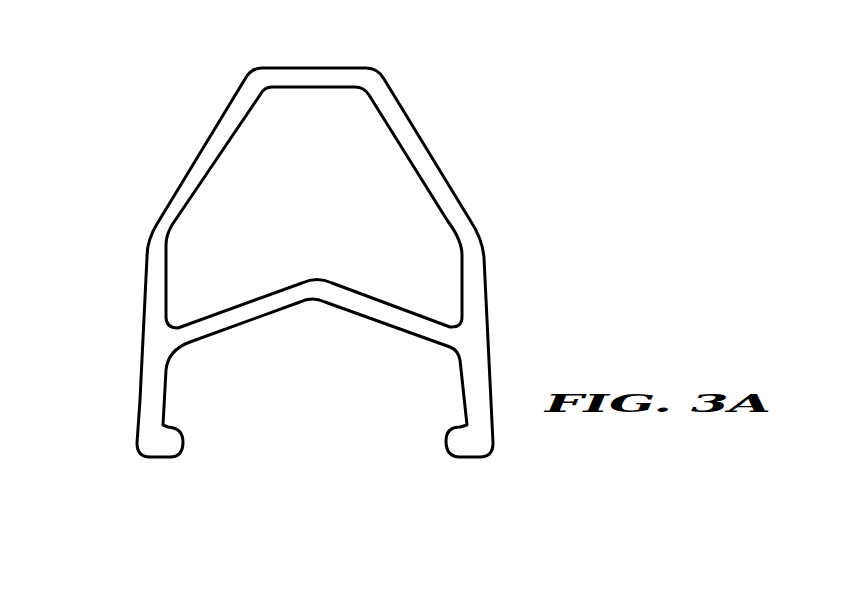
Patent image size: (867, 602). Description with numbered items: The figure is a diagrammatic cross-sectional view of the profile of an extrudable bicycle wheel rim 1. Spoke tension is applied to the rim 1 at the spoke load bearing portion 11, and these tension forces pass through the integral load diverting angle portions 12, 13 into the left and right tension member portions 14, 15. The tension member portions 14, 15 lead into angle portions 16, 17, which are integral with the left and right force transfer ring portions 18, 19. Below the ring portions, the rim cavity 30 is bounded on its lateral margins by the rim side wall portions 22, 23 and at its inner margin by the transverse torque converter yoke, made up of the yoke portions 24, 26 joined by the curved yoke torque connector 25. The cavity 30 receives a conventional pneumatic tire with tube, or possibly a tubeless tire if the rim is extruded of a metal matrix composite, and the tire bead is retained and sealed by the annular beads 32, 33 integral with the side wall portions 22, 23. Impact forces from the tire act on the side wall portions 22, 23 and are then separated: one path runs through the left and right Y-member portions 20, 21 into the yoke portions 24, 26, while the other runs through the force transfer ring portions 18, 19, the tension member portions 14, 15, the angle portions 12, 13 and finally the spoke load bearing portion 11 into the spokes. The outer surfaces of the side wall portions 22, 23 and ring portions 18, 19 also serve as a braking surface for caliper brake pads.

The rim 1 is at (332, 52).
The spoke load bearing portion 11 is at (283, 75).
The load diverting angle portion 12 is at (252, 90).
The load diverting angle portion 13 is at (375, 85).
The left tension member portion 14 is at (207, 155).
The right tension member portion 15 is at (422, 157).
The angle portion 16 is at (158, 245).
The angle portion 17 is at (472, 247).
The force transfer ring portion 18 is at (155, 300).
The force transfer ring portion 19 is at (475, 307).
The Y-member portion 20 is at (165, 340).
The Y-member portion 21 is at (467, 337).
The rim side wall portion 22 is at (152, 385).
The rim side wall portion 23 is at (478, 402).
The transverse torque converter yoke portion 24 is at (227, 317).
The curved yoke torque connector 25 is at (322, 288).
The transverse torque converter yoke portion 26 is at (378, 307).
The rim cavity 30 is at (268, 396).
The annular bead 32 is at (170, 442).
The annular bead 33 is at (465, 447).